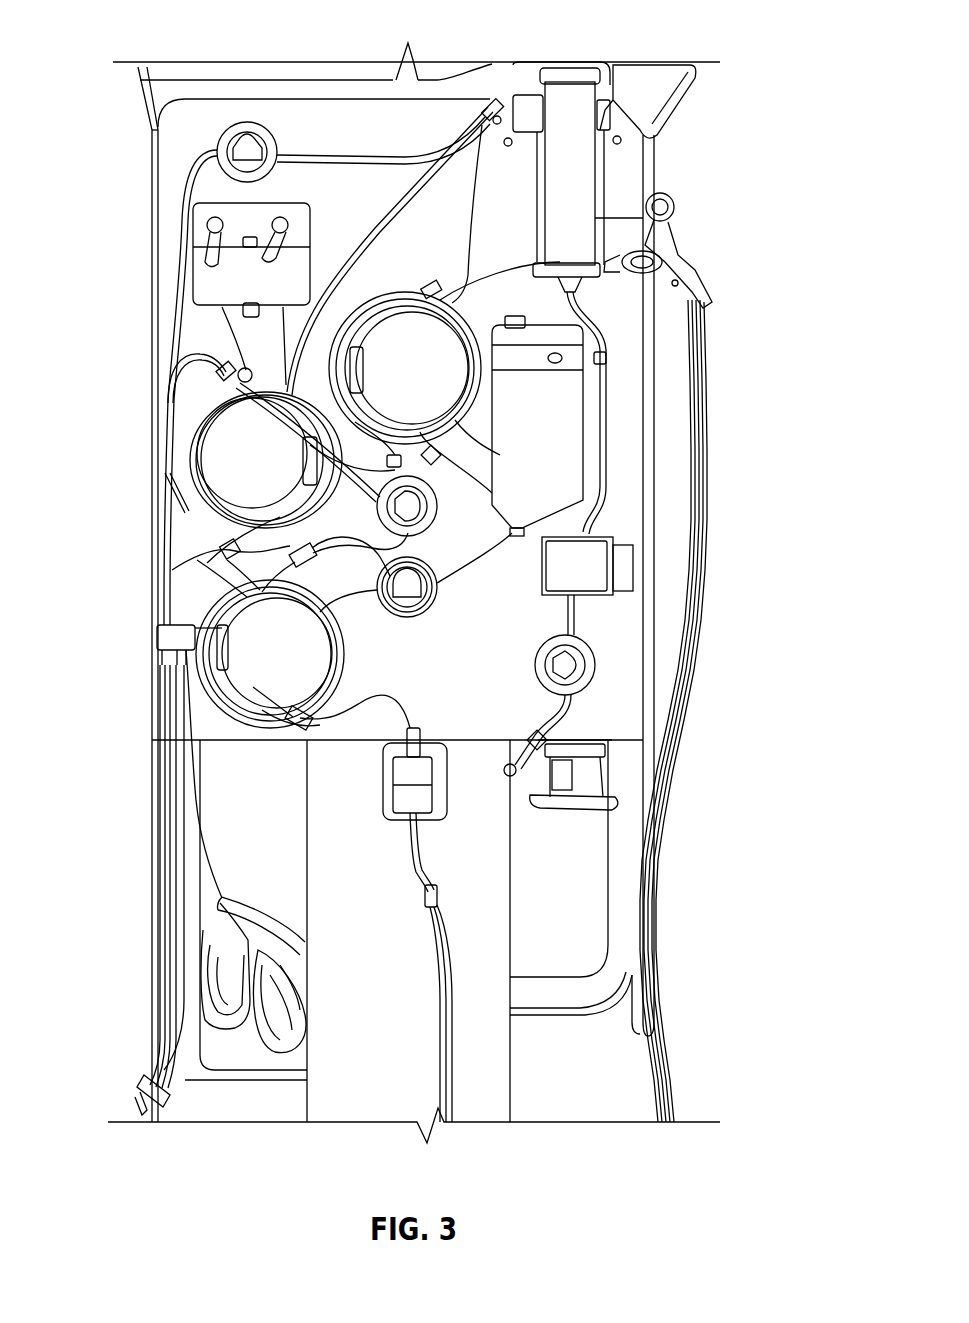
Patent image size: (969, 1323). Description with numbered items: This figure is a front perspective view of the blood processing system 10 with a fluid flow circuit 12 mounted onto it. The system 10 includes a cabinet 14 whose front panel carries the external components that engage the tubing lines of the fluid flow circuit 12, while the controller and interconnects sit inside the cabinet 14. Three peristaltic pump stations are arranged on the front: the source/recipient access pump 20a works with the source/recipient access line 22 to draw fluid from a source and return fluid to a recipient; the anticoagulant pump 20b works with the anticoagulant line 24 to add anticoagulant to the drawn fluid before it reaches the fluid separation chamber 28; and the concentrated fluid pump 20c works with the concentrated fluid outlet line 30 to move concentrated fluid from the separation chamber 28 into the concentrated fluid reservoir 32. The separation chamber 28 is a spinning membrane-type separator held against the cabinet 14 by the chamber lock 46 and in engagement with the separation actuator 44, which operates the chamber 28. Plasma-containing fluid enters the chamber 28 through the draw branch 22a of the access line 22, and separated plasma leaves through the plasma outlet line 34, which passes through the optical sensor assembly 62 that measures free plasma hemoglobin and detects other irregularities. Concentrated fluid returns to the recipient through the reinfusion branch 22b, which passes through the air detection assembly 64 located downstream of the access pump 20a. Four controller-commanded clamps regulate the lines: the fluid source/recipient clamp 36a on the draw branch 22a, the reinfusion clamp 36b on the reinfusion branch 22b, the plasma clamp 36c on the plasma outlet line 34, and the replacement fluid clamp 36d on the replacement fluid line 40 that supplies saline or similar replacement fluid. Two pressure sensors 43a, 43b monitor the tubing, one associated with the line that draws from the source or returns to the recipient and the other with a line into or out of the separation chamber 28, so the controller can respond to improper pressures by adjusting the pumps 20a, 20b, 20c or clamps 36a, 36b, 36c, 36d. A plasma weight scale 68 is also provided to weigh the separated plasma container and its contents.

The blood processing system 10 is at (330, 1058).
The fluid flow circuit 12 is at (197, 164).
The cabinet 14 is at (478, 670).
The source/recipient access pump 20a is at (243, 632).
The anticoagulant pump 20b is at (240, 458).
The concentrated fluid pump 20c is at (393, 367).
The source/recipient access line 22 is at (414, 840).
The draw branch 22a is at (380, 217).
The reinfusion branch 22b is at (590, 604).
The anticoagulant line 24 is at (383, 790).
The fluid separation chamber 28 is at (575, 155).
The concentrated fluid outlet line 30 is at (490, 125).
The concentrated fluid reservoir 32 is at (540, 458).
The plasma outlet line 34 is at (607, 427).
The fluid source/recipient clamp 36a is at (407, 507).
The reinfusion clamp 36b is at (400, 587).
The plasma clamp 36c is at (575, 666).
The replacement fluid clamp 36d is at (247, 142).
The replacement fluid line 40 is at (402, 157).
The pressure sensor 43a is at (205, 221).
The pressure sensor 43b is at (290, 232).
The separation actuator 44 is at (607, 62).
The chamber lock 46 is at (685, 287).
The optical sensor assembly 62 is at (592, 568).
The air detection assembly 64 is at (414, 868).
The plasma weight scale 68 is at (577, 780).